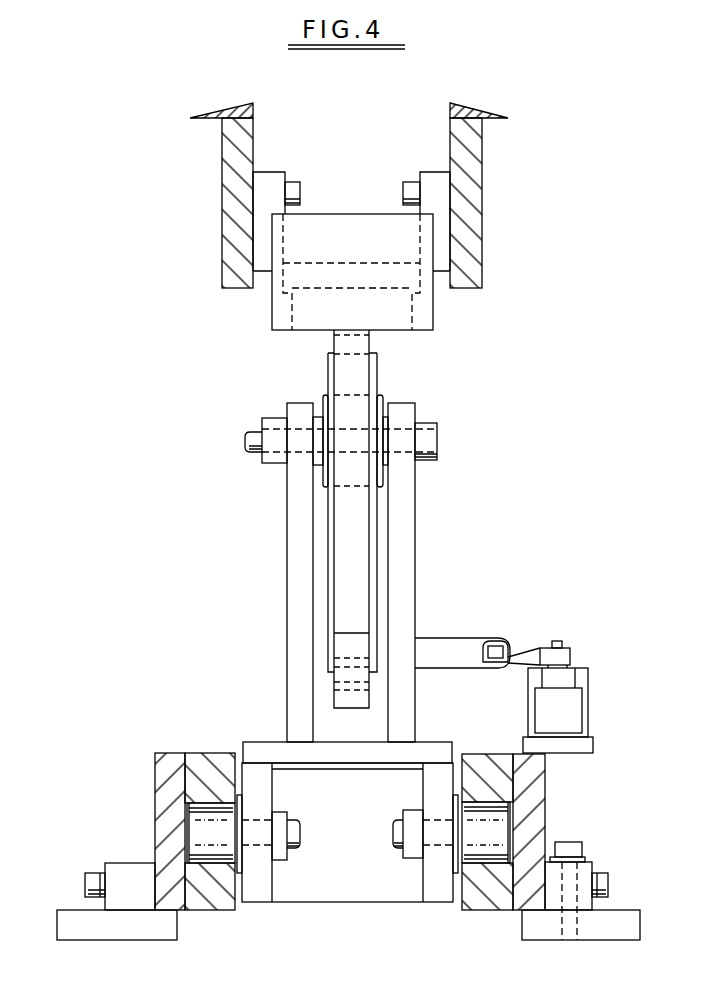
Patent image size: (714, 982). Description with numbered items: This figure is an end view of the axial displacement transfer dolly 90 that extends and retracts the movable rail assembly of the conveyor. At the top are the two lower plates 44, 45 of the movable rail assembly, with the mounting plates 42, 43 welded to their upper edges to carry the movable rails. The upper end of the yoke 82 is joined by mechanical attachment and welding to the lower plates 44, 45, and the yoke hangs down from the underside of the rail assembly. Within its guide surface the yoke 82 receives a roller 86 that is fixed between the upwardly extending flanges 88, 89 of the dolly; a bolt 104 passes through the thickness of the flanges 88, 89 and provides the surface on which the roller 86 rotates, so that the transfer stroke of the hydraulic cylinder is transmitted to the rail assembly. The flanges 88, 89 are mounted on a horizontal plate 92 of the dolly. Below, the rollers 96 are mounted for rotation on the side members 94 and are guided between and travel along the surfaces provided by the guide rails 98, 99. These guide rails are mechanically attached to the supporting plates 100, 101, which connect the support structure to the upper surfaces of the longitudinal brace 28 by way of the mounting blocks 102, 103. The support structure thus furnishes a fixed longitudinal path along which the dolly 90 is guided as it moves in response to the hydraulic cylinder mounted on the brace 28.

The longitudinal brace 28 is at (117, 932).
The mounting plate 42 is at (483, 106).
The mounting plate 43 is at (241, 104).
The lower plate 44 is at (477, 165).
The lower plate 45 is at (232, 160).
The yoke 82 is at (364, 380).
The roller 86 is at (323, 401).
The upwardly extending flange 88 is at (298, 523).
The upwardly extending flange 89 is at (403, 527).
The axial displacement transfer dolly 90 is at (307, 922).
The horizontal plate 92 is at (258, 747).
The side member 94 is at (265, 880).
The roller 96 is at (203, 829).
The guide rail 98 is at (205, 760).
The guide rail 99 is at (218, 915).
The supporting plate 100 is at (545, 775).
The supporting plate 101 is at (155, 771).
The mounting block 102 is at (580, 868).
The mounting block 103 is at (115, 866).
The bolt 104 is at (427, 440).